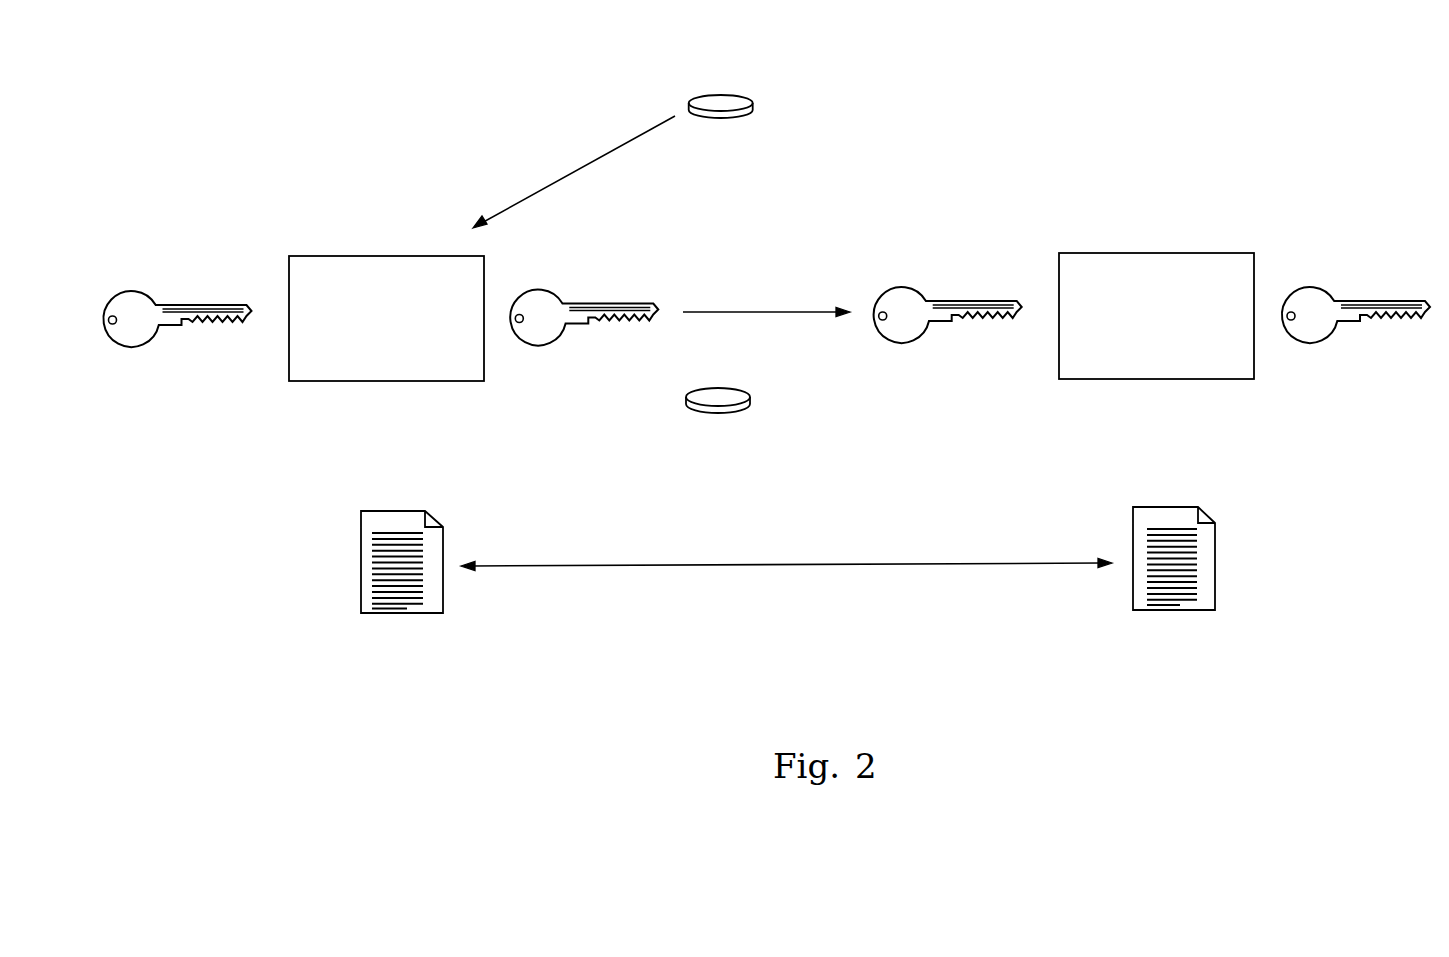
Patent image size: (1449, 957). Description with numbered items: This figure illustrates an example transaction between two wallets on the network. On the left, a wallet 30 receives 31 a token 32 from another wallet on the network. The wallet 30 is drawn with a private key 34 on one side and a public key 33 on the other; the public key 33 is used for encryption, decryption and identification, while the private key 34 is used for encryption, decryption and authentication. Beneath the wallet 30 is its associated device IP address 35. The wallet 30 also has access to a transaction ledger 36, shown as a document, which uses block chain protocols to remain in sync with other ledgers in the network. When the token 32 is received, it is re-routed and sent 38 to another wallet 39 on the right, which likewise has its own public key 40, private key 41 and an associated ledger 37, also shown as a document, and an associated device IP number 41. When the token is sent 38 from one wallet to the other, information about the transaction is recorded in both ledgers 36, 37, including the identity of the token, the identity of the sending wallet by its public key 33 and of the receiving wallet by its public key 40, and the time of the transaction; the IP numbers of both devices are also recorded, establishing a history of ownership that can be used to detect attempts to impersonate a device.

The wallet 30 is at (364, 256).
The receiving of token 31 is at (562, 175).
The token 32 is at (737, 96).
The public key 33 is at (608, 304).
The private key 34 is at (178, 305).
The device IP address 35 is at (295, 402).
The transaction ledger 36 is at (730, 415).
The ledger 37 is at (1165, 605).
The sending of token 38 is at (745, 312).
The wallet 39 is at (1140, 253).
The public key 40 is at (948, 302).
The private key 41 is at (1355, 302).